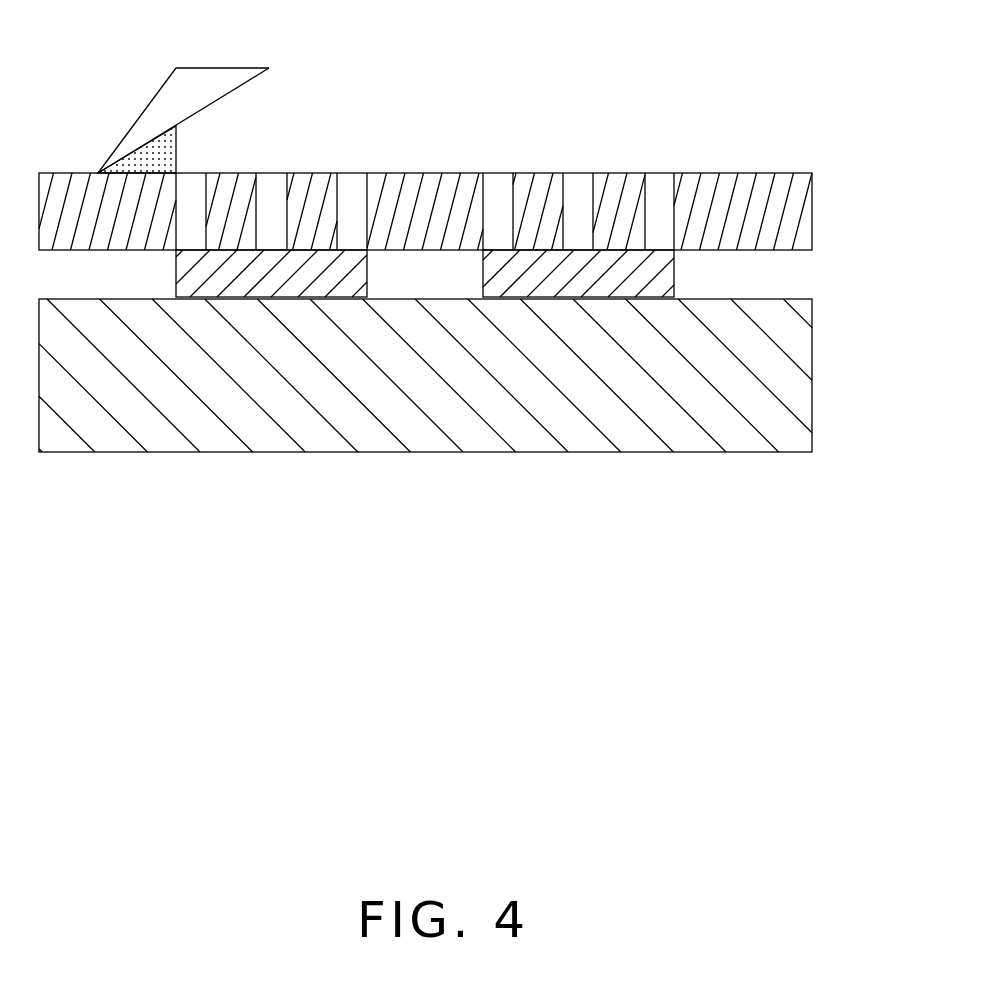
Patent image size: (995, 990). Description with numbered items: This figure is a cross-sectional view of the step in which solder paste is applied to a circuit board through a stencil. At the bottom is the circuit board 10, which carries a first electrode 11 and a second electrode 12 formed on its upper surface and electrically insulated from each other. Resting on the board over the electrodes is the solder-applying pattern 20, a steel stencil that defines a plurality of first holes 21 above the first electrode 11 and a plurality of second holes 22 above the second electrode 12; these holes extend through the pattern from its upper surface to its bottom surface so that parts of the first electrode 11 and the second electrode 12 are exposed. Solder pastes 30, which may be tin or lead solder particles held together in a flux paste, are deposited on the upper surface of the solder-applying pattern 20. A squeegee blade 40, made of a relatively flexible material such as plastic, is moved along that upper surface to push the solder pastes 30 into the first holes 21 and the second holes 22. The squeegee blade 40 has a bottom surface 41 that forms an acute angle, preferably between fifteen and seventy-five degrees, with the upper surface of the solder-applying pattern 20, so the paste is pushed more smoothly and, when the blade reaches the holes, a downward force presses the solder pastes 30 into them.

The circuit board 10 is at (777, 373).
The first electrode 11 is at (248, 280).
The second electrode 12 is at (530, 280).
The solder-applying pattern 20 is at (775, 208).
The first holes 21 is at (353, 190).
The second holes 22 is at (657, 198).
The solder pastes 30 is at (148, 157).
The squeegee blade 40 is at (202, 83).
The bottom surface 41 is at (230, 95).